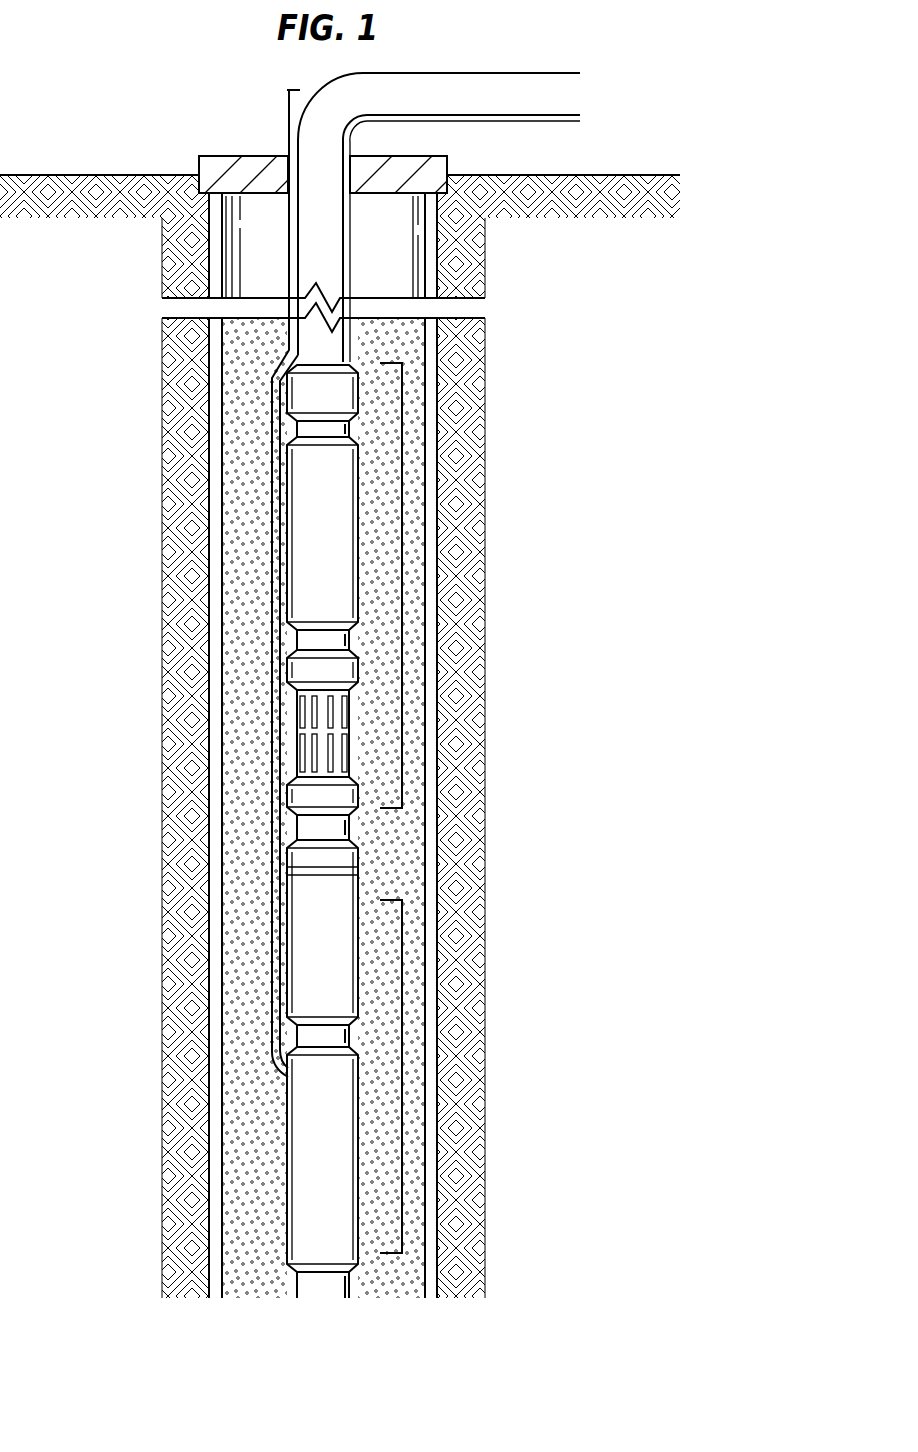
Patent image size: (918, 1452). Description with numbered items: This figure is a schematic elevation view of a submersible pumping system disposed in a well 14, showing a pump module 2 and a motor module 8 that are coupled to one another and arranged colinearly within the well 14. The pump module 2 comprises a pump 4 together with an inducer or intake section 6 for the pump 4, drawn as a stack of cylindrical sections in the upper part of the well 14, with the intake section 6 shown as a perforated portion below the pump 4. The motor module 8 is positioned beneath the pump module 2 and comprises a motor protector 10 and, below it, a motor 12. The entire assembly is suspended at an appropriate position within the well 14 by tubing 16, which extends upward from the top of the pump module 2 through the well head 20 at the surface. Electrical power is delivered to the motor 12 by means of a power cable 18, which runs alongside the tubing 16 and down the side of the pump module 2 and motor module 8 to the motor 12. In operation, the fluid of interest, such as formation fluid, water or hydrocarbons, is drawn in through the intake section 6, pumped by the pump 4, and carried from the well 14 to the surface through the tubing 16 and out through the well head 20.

The pump module 2 is at (403, 585).
The pump 4 is at (307, 533).
The inducer or intake section 6 is at (297, 747).
The motor module 8 is at (403, 1077).
The motor protector 10 is at (307, 942).
The motor 12 is at (307, 1173).
The well 14 is at (440, 836).
The tubing 16 is at (332, 235).
The power cable 18 is at (266, 433).
The well head 20 is at (228, 142).